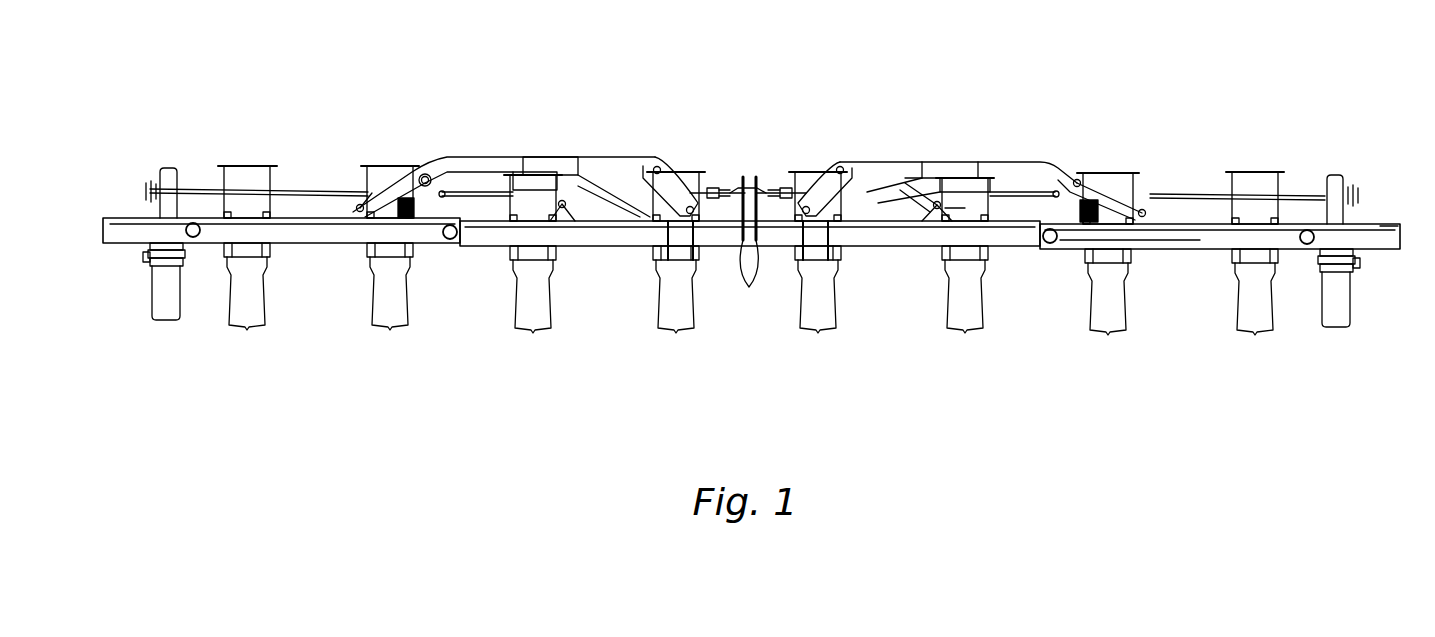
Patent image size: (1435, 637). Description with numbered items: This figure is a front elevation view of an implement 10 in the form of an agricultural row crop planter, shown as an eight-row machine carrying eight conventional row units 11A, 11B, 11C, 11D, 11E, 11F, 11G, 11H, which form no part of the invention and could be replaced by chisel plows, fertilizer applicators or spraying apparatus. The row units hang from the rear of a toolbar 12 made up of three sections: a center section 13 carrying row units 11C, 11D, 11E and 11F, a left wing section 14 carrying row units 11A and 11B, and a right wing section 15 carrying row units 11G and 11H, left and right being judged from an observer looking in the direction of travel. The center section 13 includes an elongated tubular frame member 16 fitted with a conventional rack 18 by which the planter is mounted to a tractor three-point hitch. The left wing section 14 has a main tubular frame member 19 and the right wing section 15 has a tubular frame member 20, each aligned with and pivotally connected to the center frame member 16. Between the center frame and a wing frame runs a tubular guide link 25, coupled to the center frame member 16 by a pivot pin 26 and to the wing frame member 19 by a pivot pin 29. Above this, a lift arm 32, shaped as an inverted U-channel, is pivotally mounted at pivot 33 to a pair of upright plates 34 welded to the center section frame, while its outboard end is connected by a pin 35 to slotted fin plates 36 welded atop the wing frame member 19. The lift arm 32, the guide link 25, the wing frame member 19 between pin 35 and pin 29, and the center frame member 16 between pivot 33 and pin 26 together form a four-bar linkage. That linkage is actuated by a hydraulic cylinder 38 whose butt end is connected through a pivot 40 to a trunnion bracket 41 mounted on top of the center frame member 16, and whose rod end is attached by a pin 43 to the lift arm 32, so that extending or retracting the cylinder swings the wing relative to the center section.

The implement 10 is at (755, 124).
The row unit 11A is at (1259, 170).
The row unit 11B is at (1102, 170).
The row unit 11C is at (962, 337).
The row unit 11D is at (818, 337).
The row unit 11E is at (670, 337).
The row unit 11F is at (517, 337).
The row unit 11G is at (379, 164).
The row unit 11H is at (243, 164).
The toolbar 12 is at (480, 255).
The center section 13 is at (743, 170).
The left wing section 14 is at (1212, 255).
The right wing section 15 is at (318, 250).
The tubular frame member 16 is at (890, 240).
The rack 18 is at (828, 258).
The main tubular frame member 19 is at (1385, 247).
The tubular frame member 20 is at (120, 237).
The guide link 25 is at (1165, 244).
The pivot pin 26 is at (1052, 245).
The pivot pin 29 is at (1307, 246).
The lift arm 32 is at (945, 165).
The pivot 33 is at (830, 174).
The upright plates 34 is at (772, 174).
The pin 35 is at (1076, 178).
The fin plate 36 is at (1137, 200).
The hydraulic cylinder 38 is at (918, 212).
The pivot 40 is at (933, 209).
The trunnion bracket 41 is at (958, 214).
The pin 43 is at (850, 170).